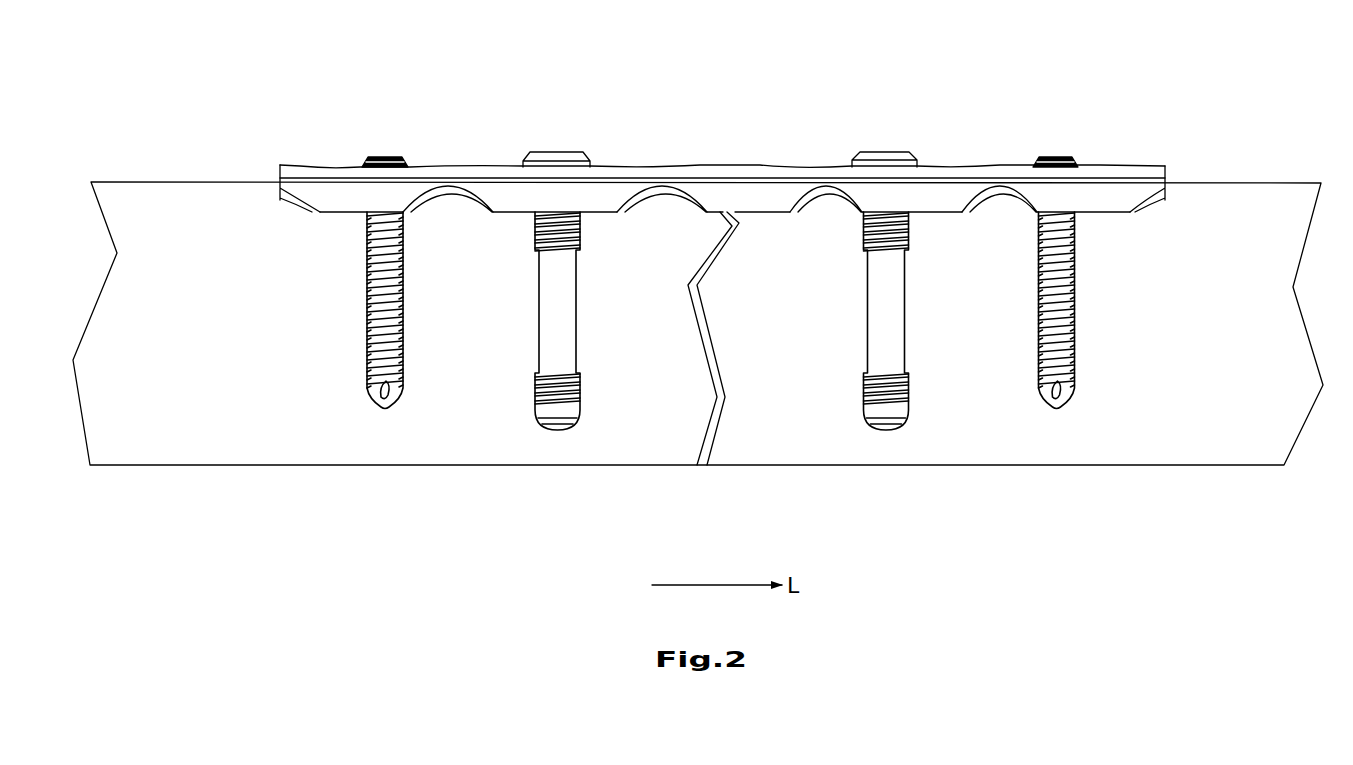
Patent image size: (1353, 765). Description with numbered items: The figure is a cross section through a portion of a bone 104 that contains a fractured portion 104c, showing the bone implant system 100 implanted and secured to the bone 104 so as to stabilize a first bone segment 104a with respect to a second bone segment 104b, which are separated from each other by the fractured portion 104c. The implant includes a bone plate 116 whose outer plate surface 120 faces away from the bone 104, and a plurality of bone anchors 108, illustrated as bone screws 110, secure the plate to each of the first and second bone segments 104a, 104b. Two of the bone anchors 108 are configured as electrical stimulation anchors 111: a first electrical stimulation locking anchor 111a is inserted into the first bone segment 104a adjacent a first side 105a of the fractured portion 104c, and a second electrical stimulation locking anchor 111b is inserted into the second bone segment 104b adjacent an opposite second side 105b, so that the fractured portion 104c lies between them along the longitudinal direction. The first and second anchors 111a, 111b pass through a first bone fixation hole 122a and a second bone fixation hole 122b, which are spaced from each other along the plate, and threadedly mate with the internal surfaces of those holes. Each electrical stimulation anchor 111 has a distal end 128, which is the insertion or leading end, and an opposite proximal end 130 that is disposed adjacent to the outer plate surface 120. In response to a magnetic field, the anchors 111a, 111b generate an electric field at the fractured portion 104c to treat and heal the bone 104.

The bone implant system 100 is at (317, 165).
The bone 104 is at (1212, 228).
The first bone segment 104a is at (603, 443).
The second bone segment 104b is at (897, 448).
The fractured portion 104c is at (713, 438).
The first side of the fractured portion 105a is at (668, 420).
The second side of the fractured portion 105b is at (740, 425).
The bone anchors 108 is at (370, 288).
The bone screws 110 is at (545, 147).
The electrical stimulation anchors 111 is at (892, 153).
The first electrical stimulation locking anchor 111a is at (547, 420).
The second electrical stimulation locking anchor 111b is at (907, 355).
The bone plate 116 is at (817, 167).
The outer plate surface 120 is at (450, 163).
The first bone fixation hole 122a is at (588, 220).
The second bone fixation hole 122b is at (912, 217).
The distal end 128 is at (557, 428).
The proximal end 130 is at (585, 152).